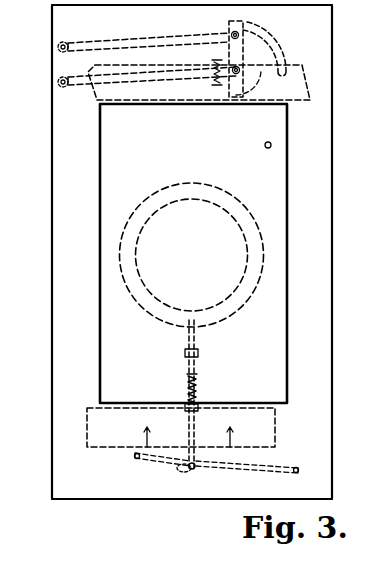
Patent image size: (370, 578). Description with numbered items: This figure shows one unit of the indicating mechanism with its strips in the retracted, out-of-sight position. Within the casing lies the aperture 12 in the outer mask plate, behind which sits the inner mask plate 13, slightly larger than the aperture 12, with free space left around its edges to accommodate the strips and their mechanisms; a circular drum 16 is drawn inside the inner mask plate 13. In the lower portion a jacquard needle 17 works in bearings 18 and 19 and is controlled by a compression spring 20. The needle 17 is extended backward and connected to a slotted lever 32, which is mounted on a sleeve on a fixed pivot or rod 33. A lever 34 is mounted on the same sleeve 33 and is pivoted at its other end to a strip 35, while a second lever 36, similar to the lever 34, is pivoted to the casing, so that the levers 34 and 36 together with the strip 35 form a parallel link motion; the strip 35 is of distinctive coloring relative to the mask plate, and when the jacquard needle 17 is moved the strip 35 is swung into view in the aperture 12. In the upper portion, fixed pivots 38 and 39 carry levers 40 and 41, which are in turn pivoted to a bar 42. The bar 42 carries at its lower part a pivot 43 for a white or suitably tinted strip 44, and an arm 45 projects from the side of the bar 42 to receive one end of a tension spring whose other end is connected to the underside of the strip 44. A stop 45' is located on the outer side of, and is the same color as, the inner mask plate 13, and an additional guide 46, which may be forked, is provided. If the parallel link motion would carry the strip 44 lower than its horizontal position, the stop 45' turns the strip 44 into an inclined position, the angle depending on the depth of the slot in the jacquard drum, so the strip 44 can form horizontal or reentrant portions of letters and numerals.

The aperture 12 is at (287, 264).
The inner mask plate 13 is at (94, 294).
The drum 16 is at (244, 299).
The jacquard needle 17 is at (198, 355).
The bearing 18 is at (187, 353).
The bearing 19 is at (186, 406).
The compression spring 20 is at (197, 388).
The slotted lever 32 is at (188, 480).
The fixed pivot or rod 33 is at (206, 468).
The lever 34 is at (162, 465).
The strip 35 is at (100, 449).
The lever 36 is at (272, 461).
The fixed pivot 38 is at (56, 46).
The fixed pivot 39 is at (56, 82).
The lever 40 is at (186, 36).
The lever 41 is at (120, 76).
The bar 42 is at (236, 53).
The pivot 43 is at (236, 72).
The strip 44 is at (138, 104).
The arm 45 is at (195, 94).
The stop 45' is at (266, 161).
The additional guide 46 is at (288, 51).